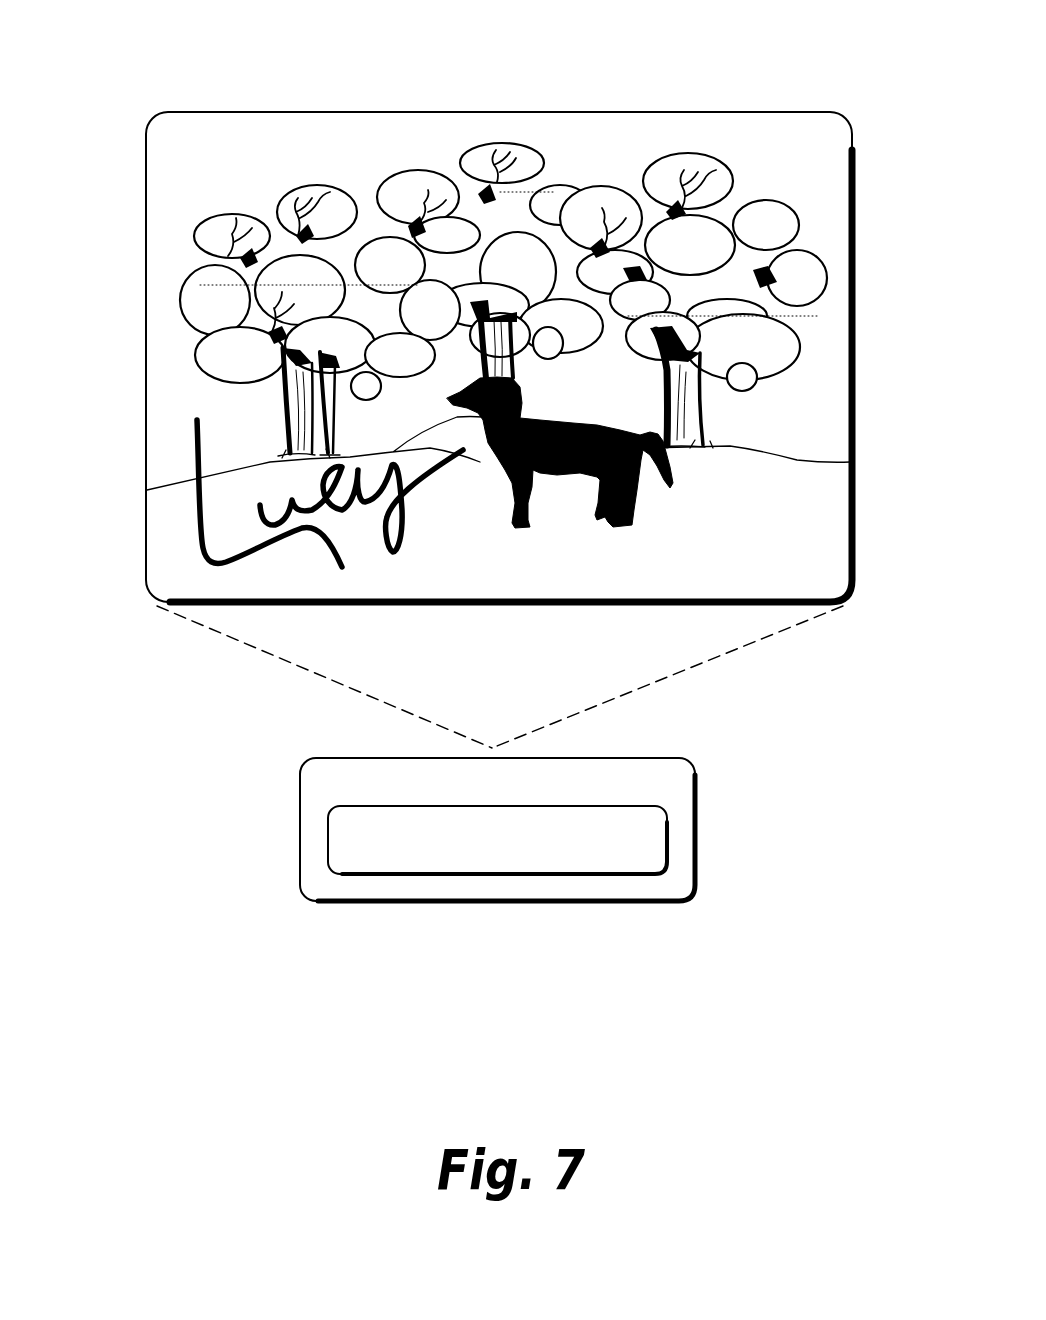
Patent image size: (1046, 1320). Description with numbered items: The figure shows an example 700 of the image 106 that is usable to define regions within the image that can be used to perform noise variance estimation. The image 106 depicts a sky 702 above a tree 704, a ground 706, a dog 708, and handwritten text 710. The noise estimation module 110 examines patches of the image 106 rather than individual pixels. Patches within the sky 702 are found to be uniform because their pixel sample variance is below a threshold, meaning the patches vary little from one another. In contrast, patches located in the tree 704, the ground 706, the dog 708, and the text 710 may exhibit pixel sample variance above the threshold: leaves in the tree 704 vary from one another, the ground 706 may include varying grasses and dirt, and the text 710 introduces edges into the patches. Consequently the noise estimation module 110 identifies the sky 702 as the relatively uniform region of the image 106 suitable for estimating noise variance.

The example implementation 700 is at (212, 80).
The sky 702 is at (594, 128).
The image 106 is at (857, 182).
The tree 704 is at (740, 222).
The ground 706 is at (741, 470).
The dog 708 is at (618, 530).
The text 710 is at (394, 553).
The noise estimation module 110 is at (497, 840).